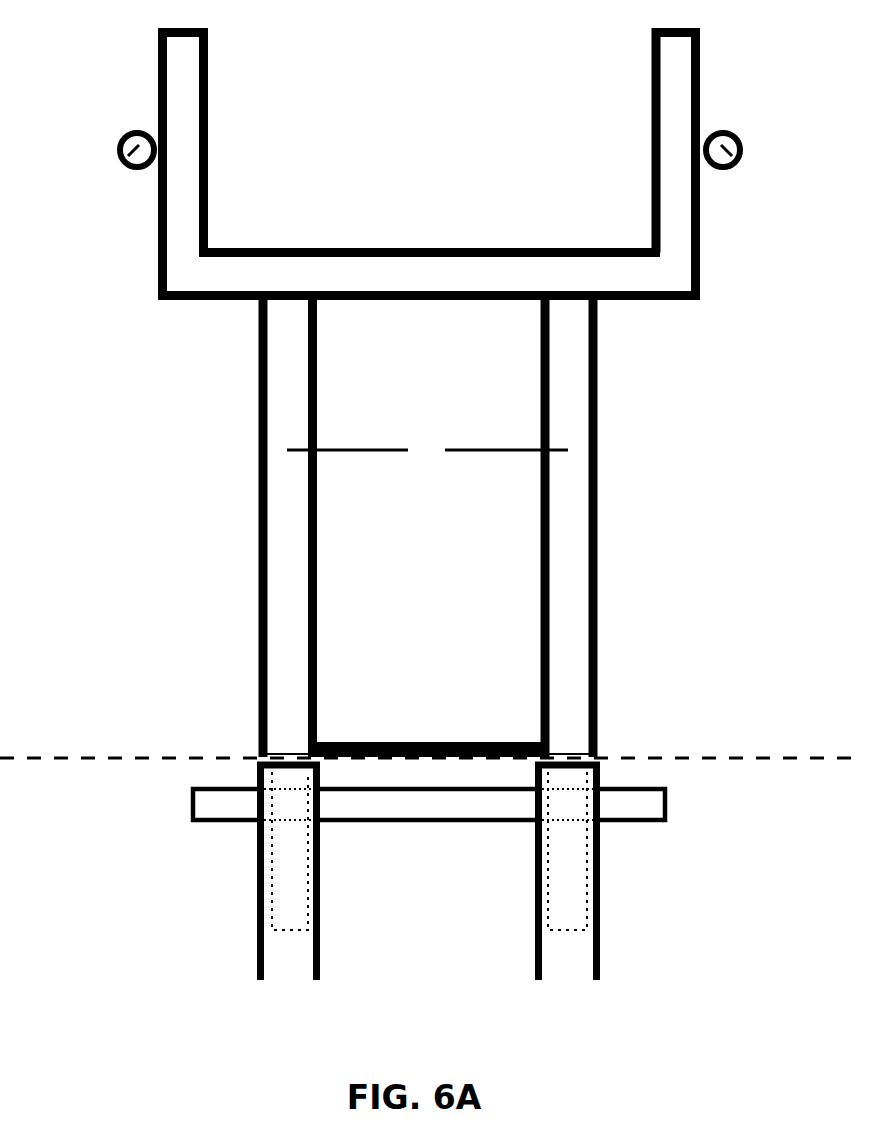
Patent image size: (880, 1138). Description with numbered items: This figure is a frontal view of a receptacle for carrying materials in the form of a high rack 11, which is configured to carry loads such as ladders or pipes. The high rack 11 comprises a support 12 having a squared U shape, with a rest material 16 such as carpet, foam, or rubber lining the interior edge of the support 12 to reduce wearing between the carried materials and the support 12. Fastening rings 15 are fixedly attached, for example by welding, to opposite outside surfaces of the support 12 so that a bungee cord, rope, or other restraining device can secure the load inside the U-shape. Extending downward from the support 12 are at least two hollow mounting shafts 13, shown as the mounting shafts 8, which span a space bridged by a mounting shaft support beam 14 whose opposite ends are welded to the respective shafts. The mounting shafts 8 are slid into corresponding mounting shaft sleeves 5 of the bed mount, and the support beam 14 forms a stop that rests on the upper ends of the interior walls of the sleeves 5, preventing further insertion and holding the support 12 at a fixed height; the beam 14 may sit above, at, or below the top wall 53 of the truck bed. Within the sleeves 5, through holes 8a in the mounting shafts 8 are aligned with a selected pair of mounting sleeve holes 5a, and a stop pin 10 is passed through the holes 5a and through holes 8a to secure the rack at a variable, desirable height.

The high rack 11 is at (395, 221).
The support 12 is at (182, 236).
The rest material 16 is at (392, 248).
The fastening rings 15 is at (122, 165).
The mounting shafts 8 is at (258, 657).
The hollow mounting shafts 13 is at (427, 451).
The mounting shaft support beam 14 is at (458, 742).
The top wall of the truck bed 53 is at (690, 760).
The stop pin 10 is at (645, 821).
The mounting shaft sleeves 5 is at (537, 948).
The through holes 8a is at (253, 828).
The mounting sleeve holes 5a is at (327, 827).